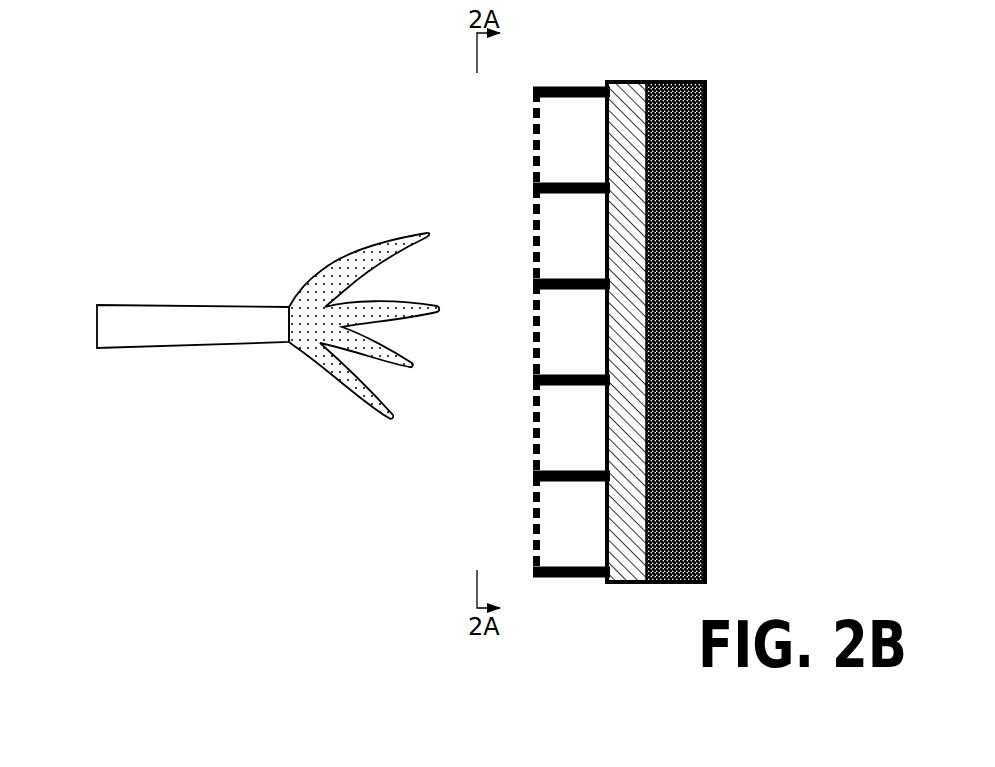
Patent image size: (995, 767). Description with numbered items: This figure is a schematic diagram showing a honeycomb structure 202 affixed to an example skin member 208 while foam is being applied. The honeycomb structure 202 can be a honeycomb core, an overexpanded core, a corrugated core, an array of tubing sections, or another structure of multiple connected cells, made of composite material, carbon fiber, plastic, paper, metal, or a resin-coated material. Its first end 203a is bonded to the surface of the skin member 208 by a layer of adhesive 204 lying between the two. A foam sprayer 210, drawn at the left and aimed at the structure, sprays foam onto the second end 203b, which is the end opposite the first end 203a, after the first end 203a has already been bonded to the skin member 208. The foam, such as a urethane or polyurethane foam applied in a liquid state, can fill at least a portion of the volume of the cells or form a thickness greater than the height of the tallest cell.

The honeycomb structure 202 is at (535, 188).
The first end of the honeycomb structure 203a is at (626, 490).
The second end of the honeycomb structure 203b is at (524, 520).
The adhesive 204 is at (632, 100).
The skin member 208 is at (687, 262).
The foam sprayer 210 is at (165, 260).